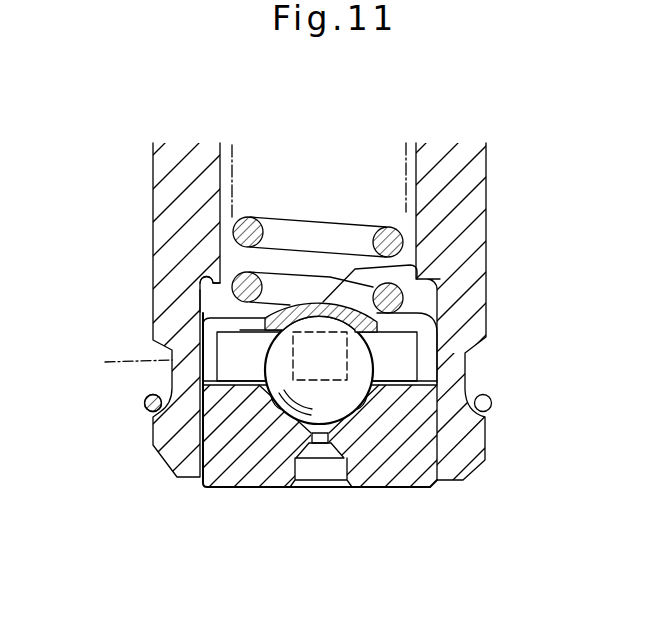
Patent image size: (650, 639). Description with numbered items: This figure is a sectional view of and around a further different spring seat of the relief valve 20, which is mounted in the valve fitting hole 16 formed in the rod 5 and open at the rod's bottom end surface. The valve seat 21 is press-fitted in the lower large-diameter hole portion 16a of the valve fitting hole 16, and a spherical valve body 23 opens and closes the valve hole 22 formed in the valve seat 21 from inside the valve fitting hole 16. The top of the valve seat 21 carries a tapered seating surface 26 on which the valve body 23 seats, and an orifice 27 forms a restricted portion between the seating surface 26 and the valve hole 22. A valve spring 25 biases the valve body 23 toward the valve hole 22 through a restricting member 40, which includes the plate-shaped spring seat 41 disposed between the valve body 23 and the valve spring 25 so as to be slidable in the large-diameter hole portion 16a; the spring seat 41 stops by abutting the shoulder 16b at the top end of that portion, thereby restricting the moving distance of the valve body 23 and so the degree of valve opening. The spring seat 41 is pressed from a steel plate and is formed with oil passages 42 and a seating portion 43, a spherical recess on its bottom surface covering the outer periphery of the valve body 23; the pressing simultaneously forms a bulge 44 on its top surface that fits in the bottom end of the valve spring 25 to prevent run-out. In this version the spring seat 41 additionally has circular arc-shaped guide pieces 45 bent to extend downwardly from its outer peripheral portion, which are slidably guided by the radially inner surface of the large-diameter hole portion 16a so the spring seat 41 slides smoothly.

The rod 5 is at (165, 162).
The valve fitting hole 16 is at (234, 150).
The large-diameter hole portion 16a is at (200, 308).
The shoulder 16b is at (200, 283).
The relief valve 20 is at (222, 490).
The valve seat 21 is at (257, 470).
The valve hole 22 is at (333, 466).
The valve body 23 is at (348, 378).
The valve spring 25 is at (233, 230).
The seating surface 26 is at (280, 410).
The orifice 27 is at (318, 445).
The restricting member 40 is at (201, 323).
The spring seat 41 is at (265, 330).
The oil passages 42 is at (422, 322).
The seating portion 43 is at (372, 354).
The bulge 44 is at (404, 257).
The guide pieces 45 is at (217, 345).